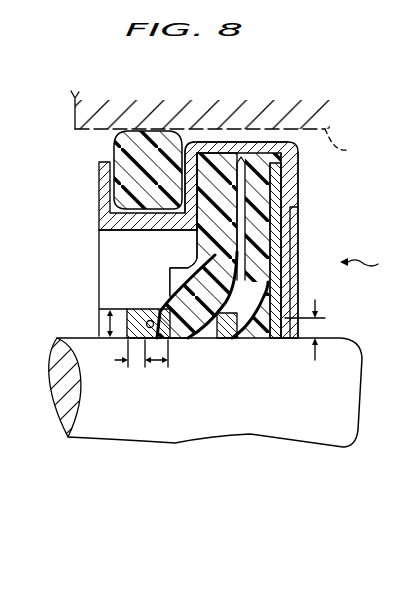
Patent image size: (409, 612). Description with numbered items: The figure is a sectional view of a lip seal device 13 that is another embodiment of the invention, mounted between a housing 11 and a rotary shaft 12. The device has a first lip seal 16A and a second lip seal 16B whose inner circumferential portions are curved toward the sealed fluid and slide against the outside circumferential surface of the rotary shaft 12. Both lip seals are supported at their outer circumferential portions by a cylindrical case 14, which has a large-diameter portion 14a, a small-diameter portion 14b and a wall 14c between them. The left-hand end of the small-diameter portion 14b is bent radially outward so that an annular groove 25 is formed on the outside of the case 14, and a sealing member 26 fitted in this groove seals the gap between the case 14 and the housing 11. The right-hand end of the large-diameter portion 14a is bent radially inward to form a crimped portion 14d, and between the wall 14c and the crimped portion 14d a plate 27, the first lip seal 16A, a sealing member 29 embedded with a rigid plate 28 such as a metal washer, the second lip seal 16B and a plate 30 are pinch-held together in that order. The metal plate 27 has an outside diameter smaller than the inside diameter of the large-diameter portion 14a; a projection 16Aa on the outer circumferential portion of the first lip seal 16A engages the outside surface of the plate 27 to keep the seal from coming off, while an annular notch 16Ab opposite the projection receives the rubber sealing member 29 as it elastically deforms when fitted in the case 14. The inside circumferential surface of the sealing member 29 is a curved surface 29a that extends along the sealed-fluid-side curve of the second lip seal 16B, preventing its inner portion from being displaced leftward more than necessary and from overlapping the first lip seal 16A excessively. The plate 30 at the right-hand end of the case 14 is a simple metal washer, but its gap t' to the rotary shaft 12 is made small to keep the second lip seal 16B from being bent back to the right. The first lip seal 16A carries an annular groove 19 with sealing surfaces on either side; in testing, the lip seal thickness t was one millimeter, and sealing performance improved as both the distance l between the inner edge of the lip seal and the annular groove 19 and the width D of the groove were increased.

The housing 11 is at (221, 132).
The rotary shaft 12 is at (350, 383).
The lip seal device 13 is at (402, 274).
The cylindrical case 14 is at (202, 205).
The large-diameter portion 14a is at (280, 143).
The small-diameter portion 14b is at (144, 232).
The wall 14c is at (185, 145).
The crimped portion 14d is at (299, 199).
The first lip seal 16A is at (213, 221).
The projection 16Aa is at (197, 150).
The annular notch 16Ab is at (228, 158).
The second lip seal 16B is at (264, 340).
The annular groove 19 is at (170, 308).
The annular groove 25 is at (100, 214).
The sealing member 26 is at (113, 150).
The plate 27 is at (190, 146).
The rigid plate 28 is at (286, 245).
The sealing member 29 is at (270, 272).
The curved surface 29a is at (232, 339).
The plate 30 is at (295, 186).
The thickness t is at (93, 322).
The gap t' is at (319, 329).
The distance l is at (126, 366).
The width D is at (155, 366).